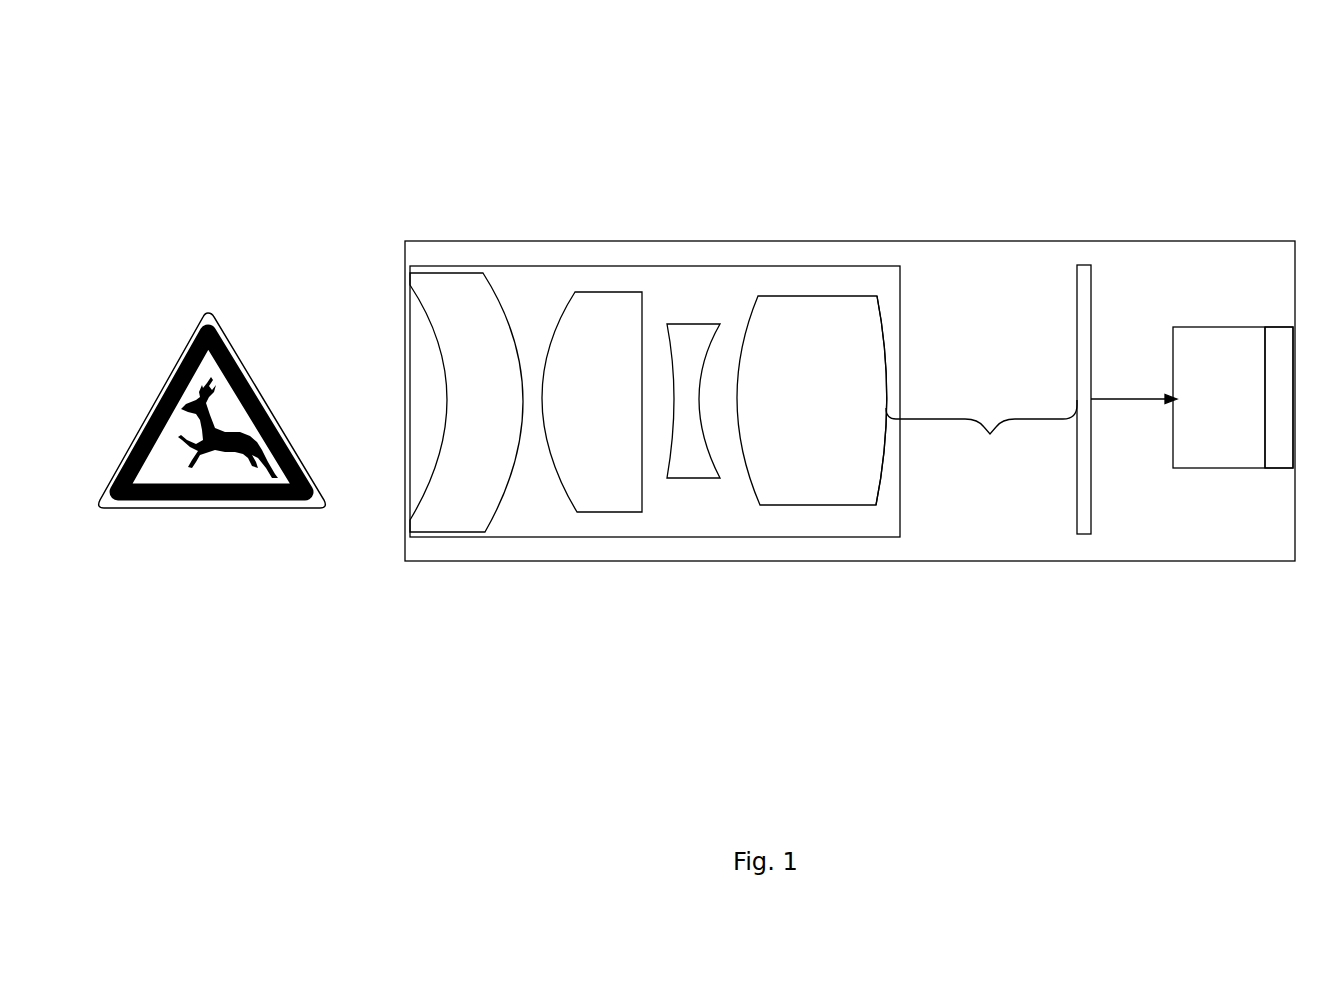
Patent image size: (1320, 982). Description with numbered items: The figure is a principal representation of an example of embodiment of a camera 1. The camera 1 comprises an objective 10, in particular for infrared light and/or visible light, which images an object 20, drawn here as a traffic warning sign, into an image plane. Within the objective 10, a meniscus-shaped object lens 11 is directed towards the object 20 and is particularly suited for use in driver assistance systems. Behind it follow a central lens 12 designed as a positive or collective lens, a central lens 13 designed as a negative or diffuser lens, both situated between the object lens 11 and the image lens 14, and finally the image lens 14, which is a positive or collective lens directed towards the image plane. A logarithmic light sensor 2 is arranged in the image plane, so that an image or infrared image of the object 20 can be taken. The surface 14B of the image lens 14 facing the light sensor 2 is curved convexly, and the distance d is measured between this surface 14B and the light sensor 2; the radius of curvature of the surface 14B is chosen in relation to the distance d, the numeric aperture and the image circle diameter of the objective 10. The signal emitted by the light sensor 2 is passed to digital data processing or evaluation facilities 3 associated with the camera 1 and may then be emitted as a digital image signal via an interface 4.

The camera 1 is at (885, 240).
The logarithmic light sensor 2 is at (1076, 278).
The digital data processing facilities 3 is at (1226, 365).
The interface 4 is at (1284, 368).
The objective 10 is at (528, 269).
The object lens 11 is at (462, 296).
The central lens 12 is at (609, 337).
The central lens 13 is at (694, 343).
The image lens 14 is at (782, 355).
The surface of the image lens 14B is at (885, 421).
The distance d is at (991, 437).
The object 20 is at (232, 397).